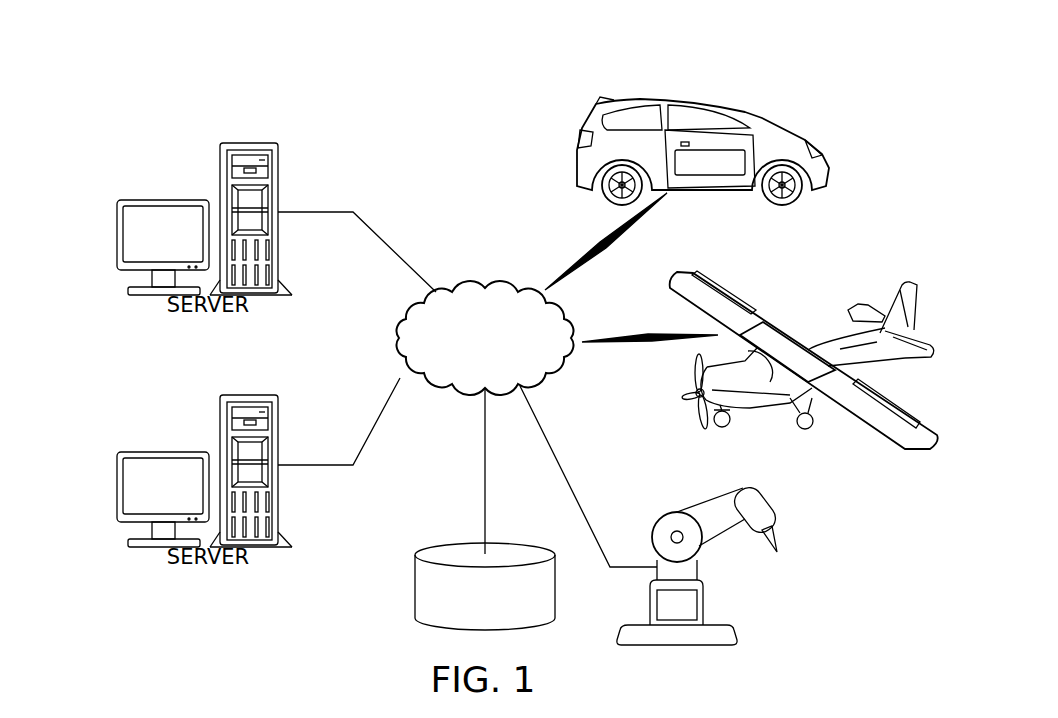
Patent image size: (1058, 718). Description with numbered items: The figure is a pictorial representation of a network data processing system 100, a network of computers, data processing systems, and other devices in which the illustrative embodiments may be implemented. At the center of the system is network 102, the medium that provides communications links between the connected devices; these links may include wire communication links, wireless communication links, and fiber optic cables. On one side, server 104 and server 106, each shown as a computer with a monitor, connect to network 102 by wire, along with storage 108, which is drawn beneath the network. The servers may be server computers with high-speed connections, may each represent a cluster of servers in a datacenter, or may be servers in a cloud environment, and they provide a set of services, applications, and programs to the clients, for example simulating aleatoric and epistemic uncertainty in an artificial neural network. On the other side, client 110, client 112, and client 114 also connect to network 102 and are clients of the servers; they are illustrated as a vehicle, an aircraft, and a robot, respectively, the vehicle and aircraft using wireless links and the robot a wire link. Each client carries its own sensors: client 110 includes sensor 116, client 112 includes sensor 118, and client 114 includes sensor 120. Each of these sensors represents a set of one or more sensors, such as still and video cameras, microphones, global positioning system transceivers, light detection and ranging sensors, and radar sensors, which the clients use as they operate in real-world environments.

The network data processing system 100 is at (350, 122).
The network 102 is at (458, 285).
The server 104 is at (117, 486).
The server 106 is at (117, 235).
The storage 108 is at (414, 592).
The client 110 is at (703, 128).
The client 112 is at (815, 351).
The client 114 is at (732, 578).
The sensor 116 is at (710, 158).
The sensor 118 is at (791, 312).
The sensor 120 is at (688, 605).